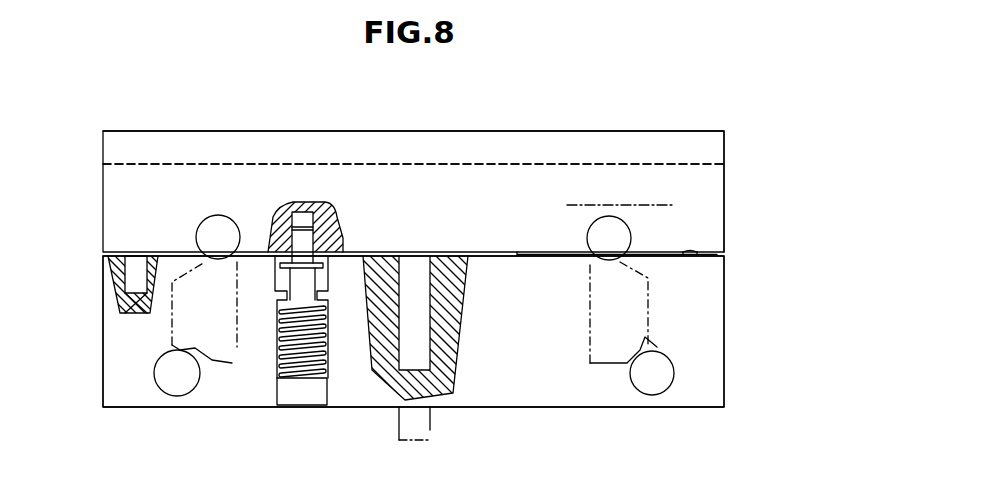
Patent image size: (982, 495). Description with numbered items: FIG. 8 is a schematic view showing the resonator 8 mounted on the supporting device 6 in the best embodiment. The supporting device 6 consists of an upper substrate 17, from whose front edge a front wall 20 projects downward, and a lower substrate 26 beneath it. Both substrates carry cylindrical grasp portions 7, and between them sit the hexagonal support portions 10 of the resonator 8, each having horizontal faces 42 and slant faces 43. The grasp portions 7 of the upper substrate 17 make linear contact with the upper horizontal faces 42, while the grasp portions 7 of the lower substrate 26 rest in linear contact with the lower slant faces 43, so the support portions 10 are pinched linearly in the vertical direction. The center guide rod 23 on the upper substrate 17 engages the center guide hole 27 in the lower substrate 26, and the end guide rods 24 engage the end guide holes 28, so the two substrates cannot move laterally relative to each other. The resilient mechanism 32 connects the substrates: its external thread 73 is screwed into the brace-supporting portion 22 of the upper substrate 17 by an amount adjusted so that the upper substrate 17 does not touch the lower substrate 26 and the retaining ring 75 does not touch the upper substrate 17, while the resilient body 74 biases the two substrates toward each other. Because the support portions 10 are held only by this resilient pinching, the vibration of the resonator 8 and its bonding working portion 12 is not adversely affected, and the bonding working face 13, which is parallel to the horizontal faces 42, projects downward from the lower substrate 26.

The supporting device 6 is at (729, 128).
The grasp portion 7 is at (218, 228).
The resonator 8 is at (647, 205).
The support portion 10 is at (237, 350).
The bonding working portion 12 is at (432, 427).
The bonding working face 13 is at (405, 440).
The upper substrate 17 is at (717, 152).
The front wall 20 is at (715, 198).
The brace-supporting portion 22 is at (300, 215).
The center guide rod 23 is at (412, 265).
The end guide rod 24 is at (140, 260).
The lower substrate 26 is at (713, 380).
The center guide hole 27 is at (452, 395).
The end guide hole 28 is at (125, 315).
The resilient mechanism 32 is at (530, 252).
The horizontal face 42 is at (217, 262).
The slant face 43 is at (212, 360).
The external thread 73 is at (312, 234).
The resilient body 74 is at (328, 362).
The retaining ring 75 is at (327, 257).